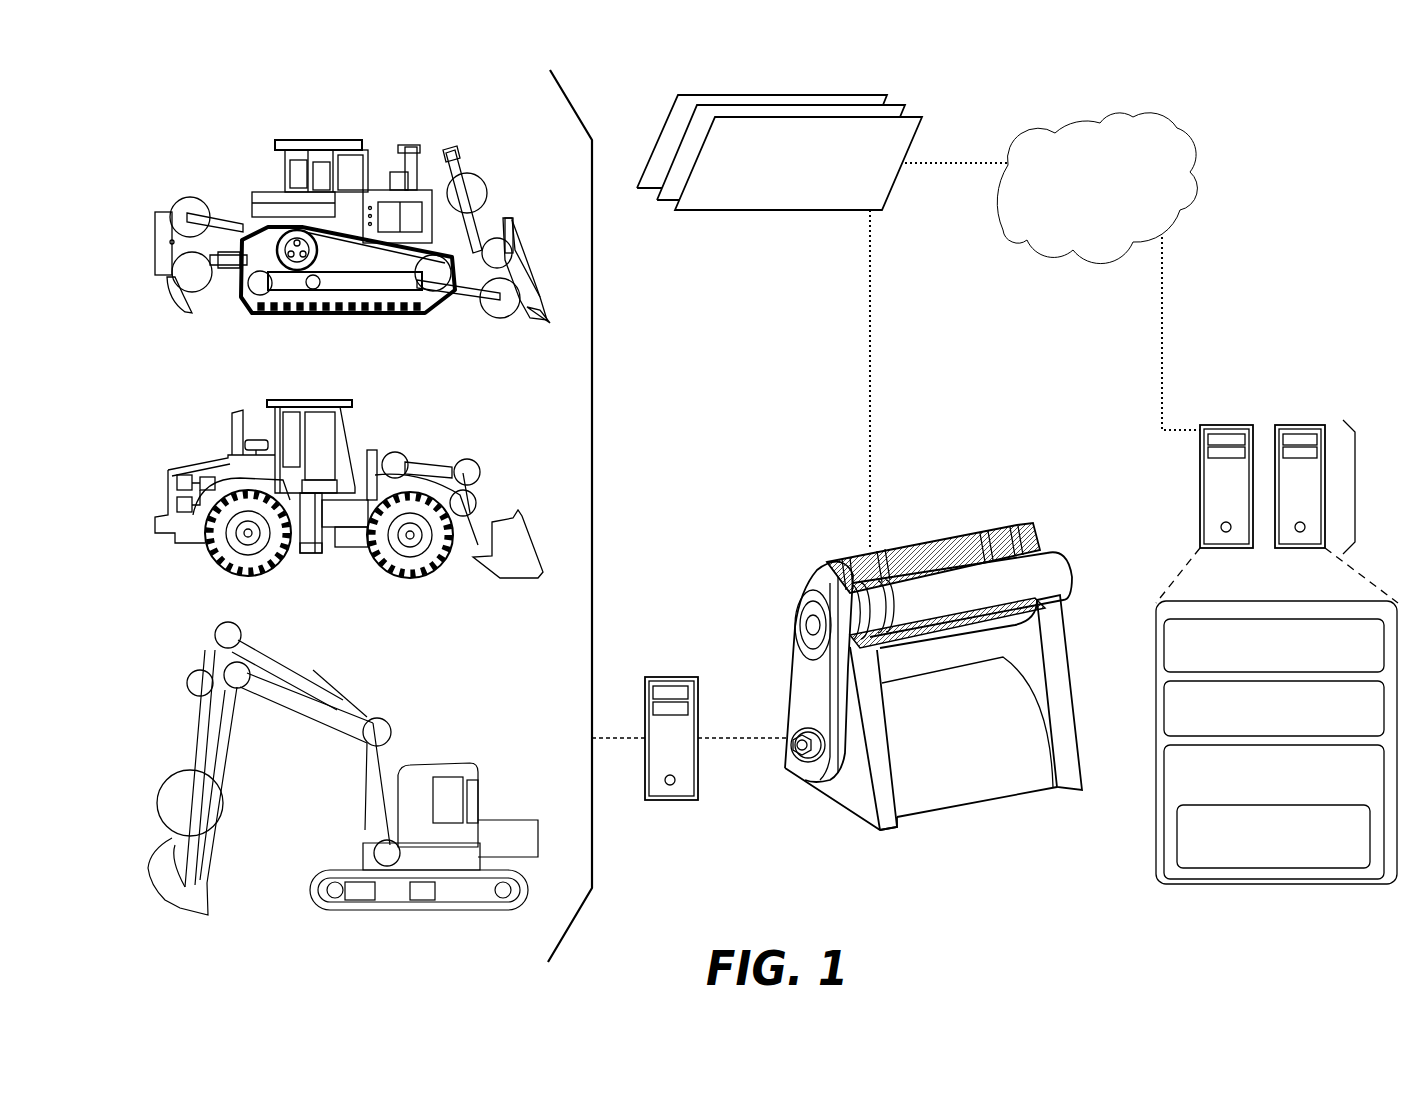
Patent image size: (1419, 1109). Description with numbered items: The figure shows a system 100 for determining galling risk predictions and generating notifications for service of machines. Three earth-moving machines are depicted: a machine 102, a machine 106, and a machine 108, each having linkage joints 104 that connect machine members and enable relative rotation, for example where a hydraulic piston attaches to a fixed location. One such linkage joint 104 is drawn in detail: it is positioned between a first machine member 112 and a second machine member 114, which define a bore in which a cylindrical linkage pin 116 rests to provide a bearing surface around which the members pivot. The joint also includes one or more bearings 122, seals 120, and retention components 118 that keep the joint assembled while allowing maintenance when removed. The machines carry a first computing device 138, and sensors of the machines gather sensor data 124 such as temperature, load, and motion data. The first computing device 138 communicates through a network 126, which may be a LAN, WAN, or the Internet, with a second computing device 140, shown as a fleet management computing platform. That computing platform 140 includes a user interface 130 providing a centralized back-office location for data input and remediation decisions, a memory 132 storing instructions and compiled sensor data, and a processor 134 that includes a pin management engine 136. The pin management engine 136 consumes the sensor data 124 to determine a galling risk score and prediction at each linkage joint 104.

The system 100 is at (1297, 148).
The machine 102 is at (180, 145).
The linkage joint 104 is at (180, 222).
The machine 106 is at (180, 425).
The machine 108 is at (168, 670).
The first machine member 112 is at (1062, 690).
The second machine member 114 is at (970, 523).
The linkage pin 116 is at (1050, 572).
The retention components 118 is at (813, 703).
The seals 120 is at (847, 593).
The bearings 122 is at (853, 587).
The sensor data 124 is at (822, 321).
The network 126 is at (1098, 271).
The user interface 130 is at (1274, 645).
The memory 132 is at (1274, 708).
The processor 134 is at (1274, 812).
The pin management engine 136 is at (1273, 836).
The first computing device 138 is at (678, 677).
The second computing device 140 is at (1355, 487).